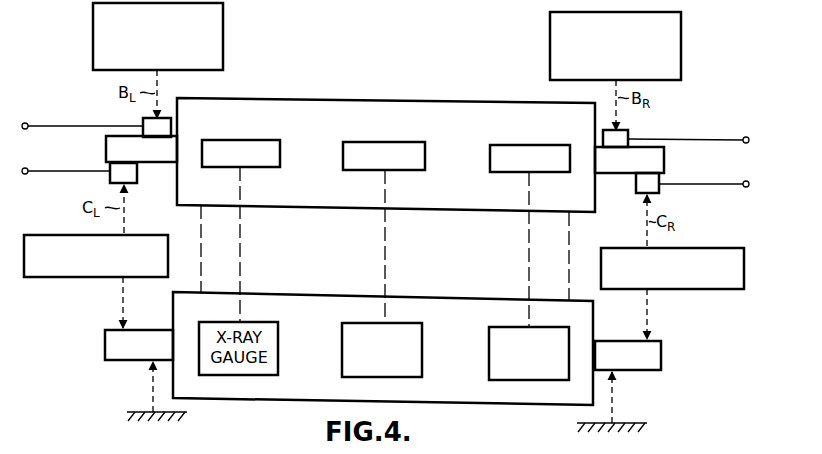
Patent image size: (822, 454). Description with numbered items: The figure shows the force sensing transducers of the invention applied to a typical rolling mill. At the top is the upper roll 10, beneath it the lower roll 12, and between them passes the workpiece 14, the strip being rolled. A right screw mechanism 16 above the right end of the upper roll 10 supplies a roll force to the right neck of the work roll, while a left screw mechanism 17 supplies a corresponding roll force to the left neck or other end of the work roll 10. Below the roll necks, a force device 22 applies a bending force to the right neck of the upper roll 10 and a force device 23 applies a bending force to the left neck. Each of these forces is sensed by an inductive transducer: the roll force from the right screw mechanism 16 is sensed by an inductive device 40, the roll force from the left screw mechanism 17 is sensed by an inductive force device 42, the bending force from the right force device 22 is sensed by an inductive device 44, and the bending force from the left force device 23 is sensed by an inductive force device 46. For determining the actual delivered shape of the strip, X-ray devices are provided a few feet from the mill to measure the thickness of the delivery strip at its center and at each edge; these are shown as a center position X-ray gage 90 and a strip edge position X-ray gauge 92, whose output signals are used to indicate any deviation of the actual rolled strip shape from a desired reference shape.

The upper roll 10 is at (480, 103).
The lower roll 12 is at (516, 402).
The workpiece 14 is at (569, 232).
The right screw mechanism 16 is at (550, 24).
The left screw mechanism 17 is at (223, 20).
The force device 22 is at (713, 248).
The force device 23 is at (62, 235).
The inductive device 40 is at (628, 135).
The inductive force device 42 is at (142, 120).
The inductive device 44 is at (635, 180).
The inductive force device 46 is at (136, 170).
The center position X-ray gage 90 is at (402, 323).
The strip edge position X-ray gauge 92 is at (545, 327).